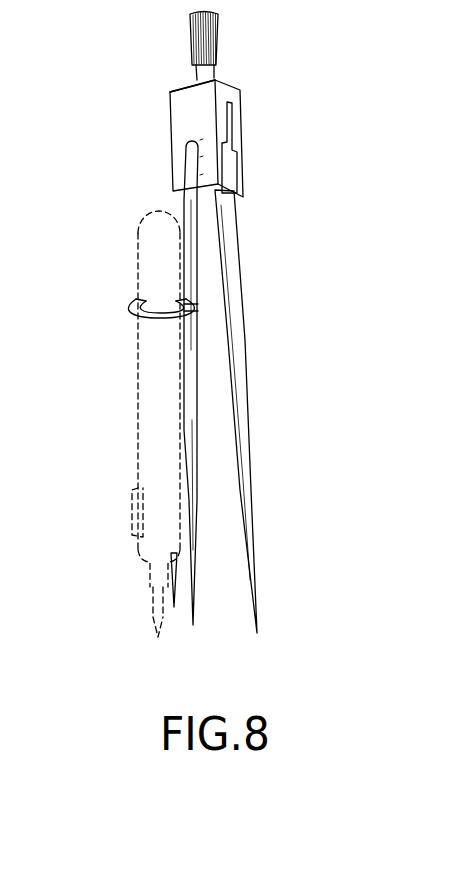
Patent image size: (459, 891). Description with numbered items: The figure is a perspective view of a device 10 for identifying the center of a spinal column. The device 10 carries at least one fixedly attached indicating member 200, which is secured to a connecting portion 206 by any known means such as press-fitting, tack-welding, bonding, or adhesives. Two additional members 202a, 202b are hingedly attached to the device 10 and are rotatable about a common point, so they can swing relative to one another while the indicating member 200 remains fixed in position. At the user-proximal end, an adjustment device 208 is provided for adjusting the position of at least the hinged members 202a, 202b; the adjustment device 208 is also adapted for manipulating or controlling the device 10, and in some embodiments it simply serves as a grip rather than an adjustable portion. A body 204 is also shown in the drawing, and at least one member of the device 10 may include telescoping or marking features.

The device 10 is at (207, 321).
The indicating member 200 is at (196, 338).
The hinged member 202a is at (248, 408).
The hinged member 202b is at (178, 208).
The body block 204 is at (275, 97).
The connecting portion 206 is at (173, 88).
The adjustment device 208 is at (220, 22).